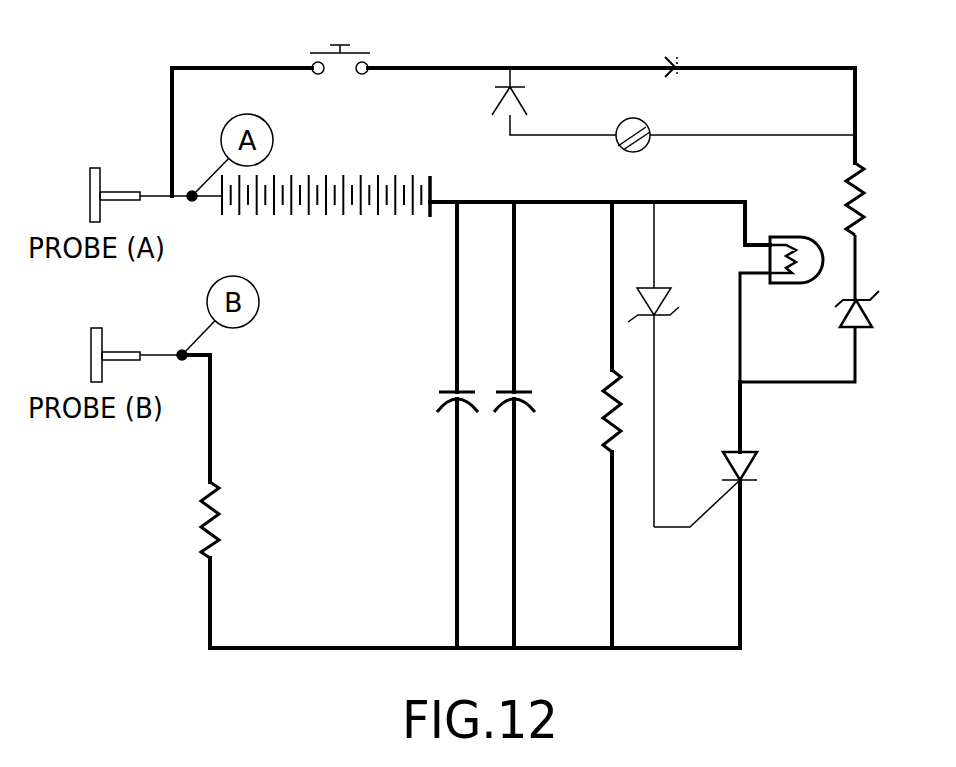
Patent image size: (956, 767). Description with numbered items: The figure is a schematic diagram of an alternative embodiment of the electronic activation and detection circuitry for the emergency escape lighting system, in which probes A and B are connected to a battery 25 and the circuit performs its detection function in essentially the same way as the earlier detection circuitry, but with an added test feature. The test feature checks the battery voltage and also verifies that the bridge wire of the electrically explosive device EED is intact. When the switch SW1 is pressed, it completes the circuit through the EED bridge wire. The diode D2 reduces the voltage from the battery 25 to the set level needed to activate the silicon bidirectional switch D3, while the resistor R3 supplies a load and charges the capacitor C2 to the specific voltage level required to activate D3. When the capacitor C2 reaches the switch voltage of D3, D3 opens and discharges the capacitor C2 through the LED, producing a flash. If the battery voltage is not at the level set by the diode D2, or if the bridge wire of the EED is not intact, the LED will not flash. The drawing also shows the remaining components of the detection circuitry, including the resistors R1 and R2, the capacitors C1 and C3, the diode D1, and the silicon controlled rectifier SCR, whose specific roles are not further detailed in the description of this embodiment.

The 24 VDC battery 25 is at (307, 178).
The switch SW1 is at (340, 77).
The element LED is at (554, 101).
The silicon bidirectional switch D3 is at (735, 127).
The capacitor C2 is at (721, 110).
The resistor R3 is at (870, 186).
The electrically explosive device EED is at (801, 242).
The diode D2 is at (866, 291).
The zener diode D1 is at (659, 364).
The silicon controlled rectifier SCR is at (730, 473).
The resistor R2 is at (594, 411).
The resistor R1 is at (188, 520).
The capacitor C3 is at (464, 375).
The capacitor C1 is at (521, 375).